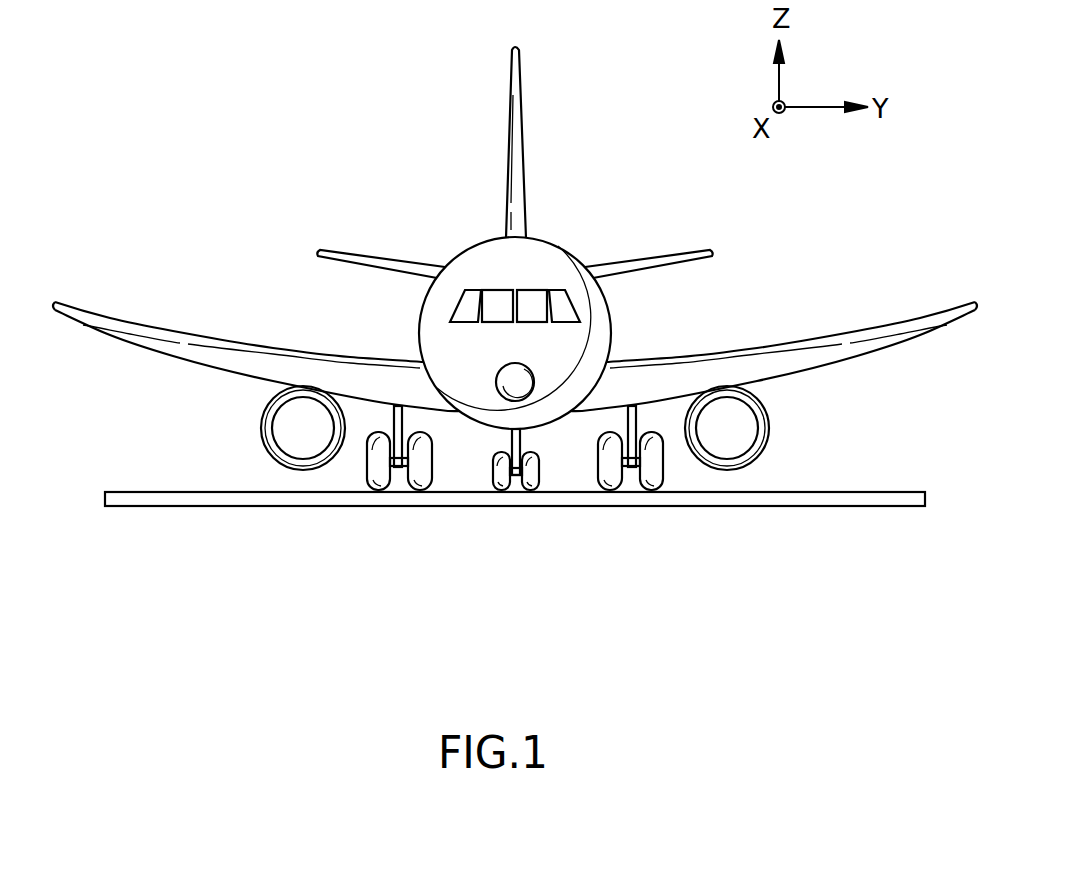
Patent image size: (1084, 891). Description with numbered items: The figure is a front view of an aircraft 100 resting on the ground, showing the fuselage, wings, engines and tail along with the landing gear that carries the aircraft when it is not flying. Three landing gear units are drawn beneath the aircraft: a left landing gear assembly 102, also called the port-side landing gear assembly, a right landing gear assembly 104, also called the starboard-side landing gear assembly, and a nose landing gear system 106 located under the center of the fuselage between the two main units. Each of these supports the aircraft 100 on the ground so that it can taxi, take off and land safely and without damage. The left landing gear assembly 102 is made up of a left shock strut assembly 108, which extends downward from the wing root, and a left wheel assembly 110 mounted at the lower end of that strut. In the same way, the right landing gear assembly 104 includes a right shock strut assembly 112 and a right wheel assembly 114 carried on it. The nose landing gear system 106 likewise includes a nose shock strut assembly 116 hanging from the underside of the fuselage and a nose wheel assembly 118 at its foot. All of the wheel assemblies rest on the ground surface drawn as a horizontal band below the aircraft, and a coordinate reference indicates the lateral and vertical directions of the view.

The aircraft 100 is at (348, 140).
The left landing gear assembly 102 is at (712, 495).
The right landing gear assembly 104 is at (368, 405).
The nose landing gear system 106 is at (468, 487).
The left shock strut assembly 108 is at (627, 418).
The left wheel assembly 110 is at (638, 490).
The right shock strut assembly 112 is at (397, 453).
The right wheel assembly 114 is at (400, 490).
The nose shock strut assembly 116 is at (520, 428).
The nose wheel assembly 118 is at (515, 490).